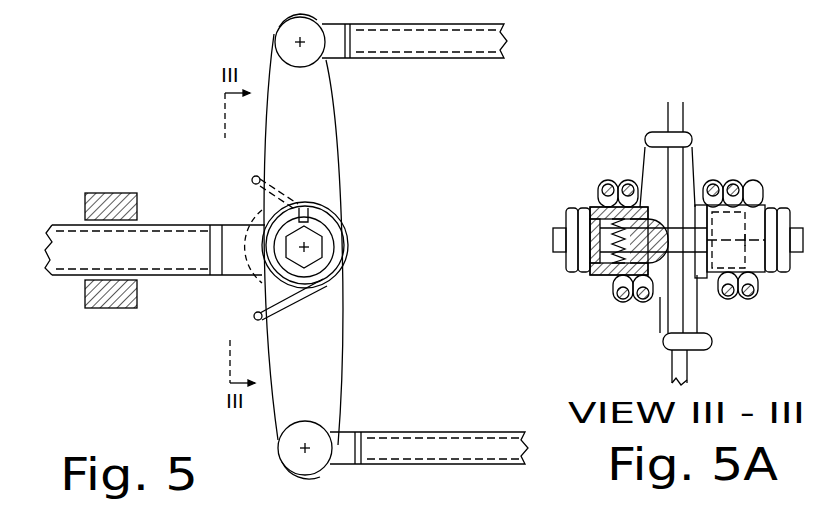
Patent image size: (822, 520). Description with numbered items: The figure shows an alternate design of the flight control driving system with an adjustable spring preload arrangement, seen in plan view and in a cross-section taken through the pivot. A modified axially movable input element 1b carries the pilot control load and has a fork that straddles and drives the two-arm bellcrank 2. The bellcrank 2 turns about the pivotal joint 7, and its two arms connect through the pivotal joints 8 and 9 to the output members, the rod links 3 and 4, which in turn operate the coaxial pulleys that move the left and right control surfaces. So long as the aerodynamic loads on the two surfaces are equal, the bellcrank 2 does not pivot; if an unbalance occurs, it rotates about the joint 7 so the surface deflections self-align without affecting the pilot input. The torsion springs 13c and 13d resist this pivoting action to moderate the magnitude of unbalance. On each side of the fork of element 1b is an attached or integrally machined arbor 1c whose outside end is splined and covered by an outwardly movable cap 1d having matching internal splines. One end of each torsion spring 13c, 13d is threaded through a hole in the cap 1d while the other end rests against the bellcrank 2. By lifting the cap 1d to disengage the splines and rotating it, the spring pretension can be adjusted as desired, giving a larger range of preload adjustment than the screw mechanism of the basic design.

In FIG. 5, the modified axially movable element 1b is at (172, 247).
In FIG. 5A, the modified axially movable element 1b is at (652, 270).
In FIG. 5A, the arbor 1c is at (643, 260).
In FIG. 5A, the cap 1d is at (593, 262).
In FIG. 5, the two-arm bellcrank 2 is at (306, 107).
In FIG. 5A, the two-arm bellcrank 2 is at (678, 318).
In FIG. 5, the rod link 3 is at (470, 43).
In FIG. 5, the rod link 4 is at (460, 445).
In FIG. 5, the pivotal joint 7 is at (306, 247).
In FIG. 5, the pivotal joint 8 is at (300, 42).
In FIG. 5, the pivotal joint 9 is at (302, 448).
In FIG. 5, the torsion spring 13c is at (254, 317).
In FIG. 5A, the torsion spring 13c is at (713, 183).
In FIG. 5, the torsion spring 13d is at (254, 179).
In FIG. 5A, the torsion spring 13d is at (605, 185).